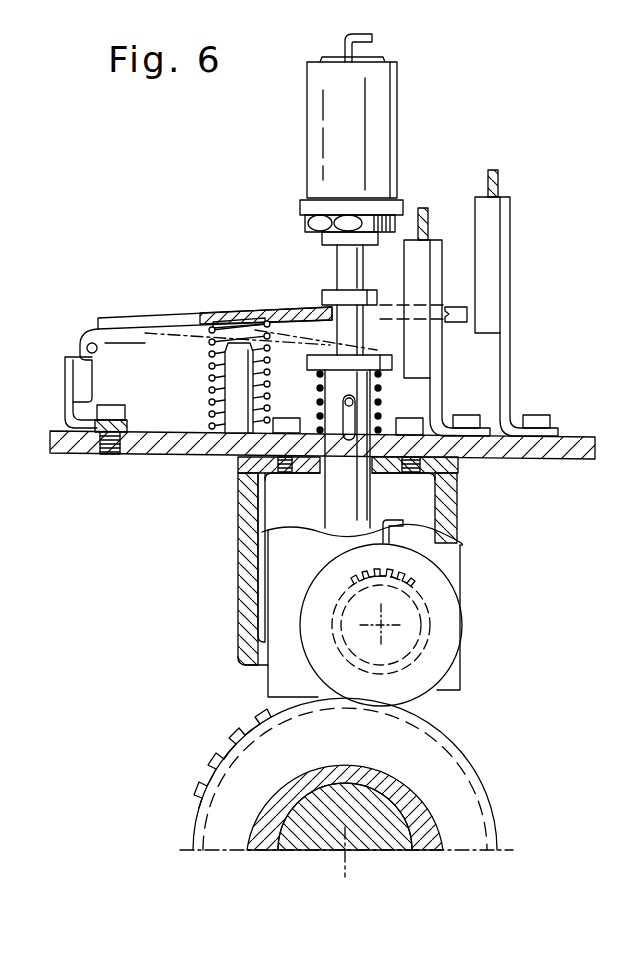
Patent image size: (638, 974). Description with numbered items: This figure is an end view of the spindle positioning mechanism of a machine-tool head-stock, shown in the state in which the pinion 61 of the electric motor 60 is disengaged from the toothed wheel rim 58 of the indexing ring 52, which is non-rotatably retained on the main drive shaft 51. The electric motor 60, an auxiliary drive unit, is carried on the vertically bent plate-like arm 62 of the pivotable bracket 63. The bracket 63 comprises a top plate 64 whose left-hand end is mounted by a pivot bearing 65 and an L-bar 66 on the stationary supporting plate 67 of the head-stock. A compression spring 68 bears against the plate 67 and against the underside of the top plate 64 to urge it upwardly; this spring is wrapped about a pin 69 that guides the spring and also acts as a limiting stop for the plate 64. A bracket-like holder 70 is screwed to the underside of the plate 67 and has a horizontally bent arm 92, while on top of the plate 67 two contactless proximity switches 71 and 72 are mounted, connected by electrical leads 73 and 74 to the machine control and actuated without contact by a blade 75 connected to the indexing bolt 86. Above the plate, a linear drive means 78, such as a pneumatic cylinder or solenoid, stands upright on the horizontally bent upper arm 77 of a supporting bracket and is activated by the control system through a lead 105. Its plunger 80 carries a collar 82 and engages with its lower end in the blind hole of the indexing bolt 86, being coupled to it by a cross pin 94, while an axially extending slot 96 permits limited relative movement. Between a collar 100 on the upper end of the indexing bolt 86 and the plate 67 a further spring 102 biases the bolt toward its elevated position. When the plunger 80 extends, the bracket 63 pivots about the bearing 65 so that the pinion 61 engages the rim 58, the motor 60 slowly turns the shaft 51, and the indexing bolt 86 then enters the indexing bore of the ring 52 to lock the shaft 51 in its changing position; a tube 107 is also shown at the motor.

The lead 105 is at (346, 33).
The linear drive means 78 is at (387, 95).
The upper arm 77 is at (300, 207).
The plunger 80 is at (337, 262).
The collar 82 is at (322, 297).
The indexing bolt 86 is at (330, 503).
The axially extending slot 96 is at (350, 445).
The cross pin 94 is at (345, 407).
The collar 100 is at (307, 360).
The spring 102 is at (380, 395).
The supporting plate 67 is at (148, 453).
The bracket-like holder 70 is at (448, 513).
The plate-like arm 62 is at (283, 592).
The horizontally bent arm 92 is at (262, 668).
The electric motor 60 is at (438, 670).
The pinion 61 is at (427, 600).
The lubrication tube 107 is at (390, 519).
The toothed wheel rim 58 is at (214, 768).
The indexing ring 52 is at (437, 832).
The main drive shaft 51 is at (330, 850).
The top plate 64 is at (163, 318).
The pivotable bracket 63 is at (212, 296).
The pivot bearing 65 is at (108, 355).
The L-bar 66 is at (65, 395).
The pin 69 is at (213, 372).
The compression spring 68 is at (225, 406).
The contactless proximity switch 71 is at (418, 282).
The electrical lead 73 is at (430, 212).
The contactless proximity switch 72 is at (490, 262).
The electrical lead 74 is at (498, 178).
The blade 75 is at (457, 322).